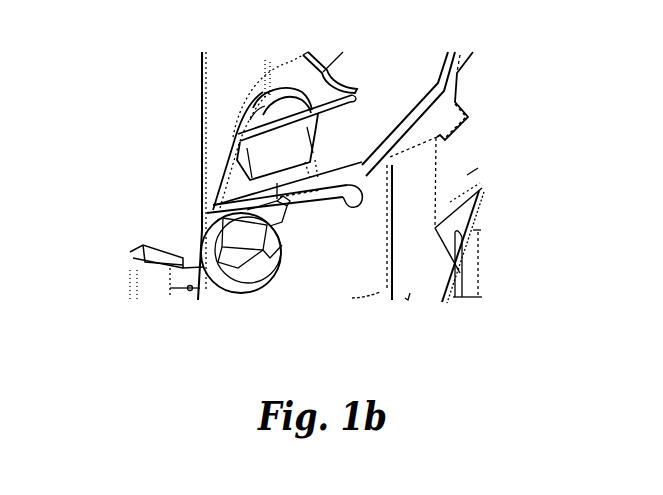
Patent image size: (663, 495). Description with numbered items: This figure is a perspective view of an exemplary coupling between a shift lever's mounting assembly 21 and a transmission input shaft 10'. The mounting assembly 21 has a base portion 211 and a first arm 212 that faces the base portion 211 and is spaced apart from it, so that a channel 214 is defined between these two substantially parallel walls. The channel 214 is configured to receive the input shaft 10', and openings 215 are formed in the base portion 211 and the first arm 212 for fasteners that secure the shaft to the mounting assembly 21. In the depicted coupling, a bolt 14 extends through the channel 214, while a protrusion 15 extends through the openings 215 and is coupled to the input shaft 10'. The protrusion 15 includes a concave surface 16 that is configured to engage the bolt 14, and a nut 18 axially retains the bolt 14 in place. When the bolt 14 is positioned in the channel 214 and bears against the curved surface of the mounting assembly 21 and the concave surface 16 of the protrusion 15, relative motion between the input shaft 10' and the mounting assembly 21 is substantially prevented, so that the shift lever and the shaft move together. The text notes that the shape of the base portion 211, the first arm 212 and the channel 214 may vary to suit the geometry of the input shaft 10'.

The mounting assembly 21 is at (115, 50).
The nut 18 is at (270, 106).
The protrusion 15 is at (268, 153).
The concave surface 16 is at (277, 195).
The bolt 14 is at (200, 261).
The channel 214 is at (281, 217).
The openings 215 is at (362, 170).
The base portion 211 is at (402, 70).
The first arm 212 is at (365, 218).
The input shaft 10' is at (422, 260).